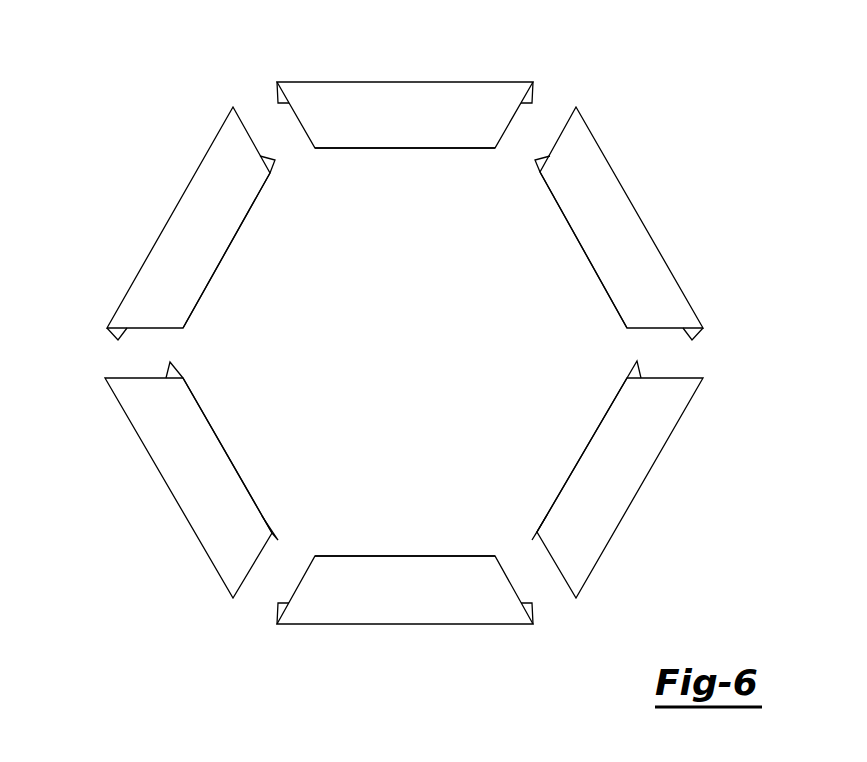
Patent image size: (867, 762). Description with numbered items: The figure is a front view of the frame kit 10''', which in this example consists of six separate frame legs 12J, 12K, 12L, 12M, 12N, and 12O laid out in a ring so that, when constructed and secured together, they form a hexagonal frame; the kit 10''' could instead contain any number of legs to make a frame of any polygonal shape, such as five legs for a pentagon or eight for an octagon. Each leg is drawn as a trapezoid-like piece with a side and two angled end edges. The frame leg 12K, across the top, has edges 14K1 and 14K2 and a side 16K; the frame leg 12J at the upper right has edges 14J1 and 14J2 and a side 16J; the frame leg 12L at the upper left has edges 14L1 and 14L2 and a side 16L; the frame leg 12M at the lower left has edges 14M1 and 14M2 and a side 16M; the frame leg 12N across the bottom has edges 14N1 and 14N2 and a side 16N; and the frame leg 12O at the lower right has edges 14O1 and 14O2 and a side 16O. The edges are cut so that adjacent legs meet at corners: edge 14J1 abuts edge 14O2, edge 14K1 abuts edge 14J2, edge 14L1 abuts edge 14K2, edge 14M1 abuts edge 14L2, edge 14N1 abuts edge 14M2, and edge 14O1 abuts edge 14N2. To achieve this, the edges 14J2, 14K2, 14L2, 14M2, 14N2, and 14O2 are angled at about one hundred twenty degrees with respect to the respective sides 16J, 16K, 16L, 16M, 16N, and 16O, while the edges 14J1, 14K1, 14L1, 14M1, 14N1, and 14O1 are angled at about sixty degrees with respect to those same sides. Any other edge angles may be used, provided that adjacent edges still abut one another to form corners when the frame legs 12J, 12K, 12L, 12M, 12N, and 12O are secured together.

The frame kit 10''' is at (670, 57).
The frame leg 12K is at (403, 92).
The frame leg 12L is at (177, 237).
The frame leg 12M is at (177, 467).
The frame leg 12N is at (405, 612).
The frame leg 12O is at (633, 467).
The frame leg 12J is at (633, 237).
The edge 14K1 is at (525, 103).
The edge 14K2 is at (280, 103).
The edge 14L1 is at (266, 164).
The edge 14L2 is at (110, 330).
The edge 14M1 is at (178, 362).
The edge 14M2 is at (270, 545).
The edge 14N1 is at (280, 603).
The edge 14N2 is at (527, 603).
The edge 14O1 is at (538, 540).
The edge 14O2 is at (635, 362).
The edge 14J1 is at (700, 330).
The edge 14J2 is at (544, 164).
The side 16K is at (408, 148).
The side 16L is at (230, 245).
The side 16M is at (230, 457).
The side 16N is at (407, 556).
The side 16O is at (580, 457).
The side 16J is at (580, 245).